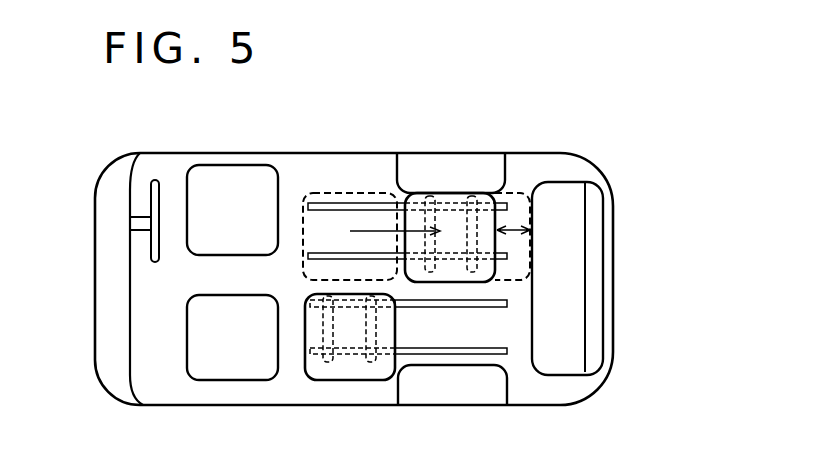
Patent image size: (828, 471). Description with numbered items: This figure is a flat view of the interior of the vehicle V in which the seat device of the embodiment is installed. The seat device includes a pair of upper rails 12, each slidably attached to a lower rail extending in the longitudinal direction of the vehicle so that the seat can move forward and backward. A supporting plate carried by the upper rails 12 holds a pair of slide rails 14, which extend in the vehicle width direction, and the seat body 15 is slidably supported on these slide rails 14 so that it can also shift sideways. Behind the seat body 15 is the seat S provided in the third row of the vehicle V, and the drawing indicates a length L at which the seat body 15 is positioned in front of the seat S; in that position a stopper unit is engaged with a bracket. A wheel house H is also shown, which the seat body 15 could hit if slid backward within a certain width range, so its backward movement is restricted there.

The upper rail 12 is at (312, 250).
The slide rail 14 is at (468, 196).
The seat body 15 is at (428, 283).
The vehicle V is at (530, 153).
The seat S is at (570, 182).
The wheel house H is at (505, 168).
The length L is at (513, 218).